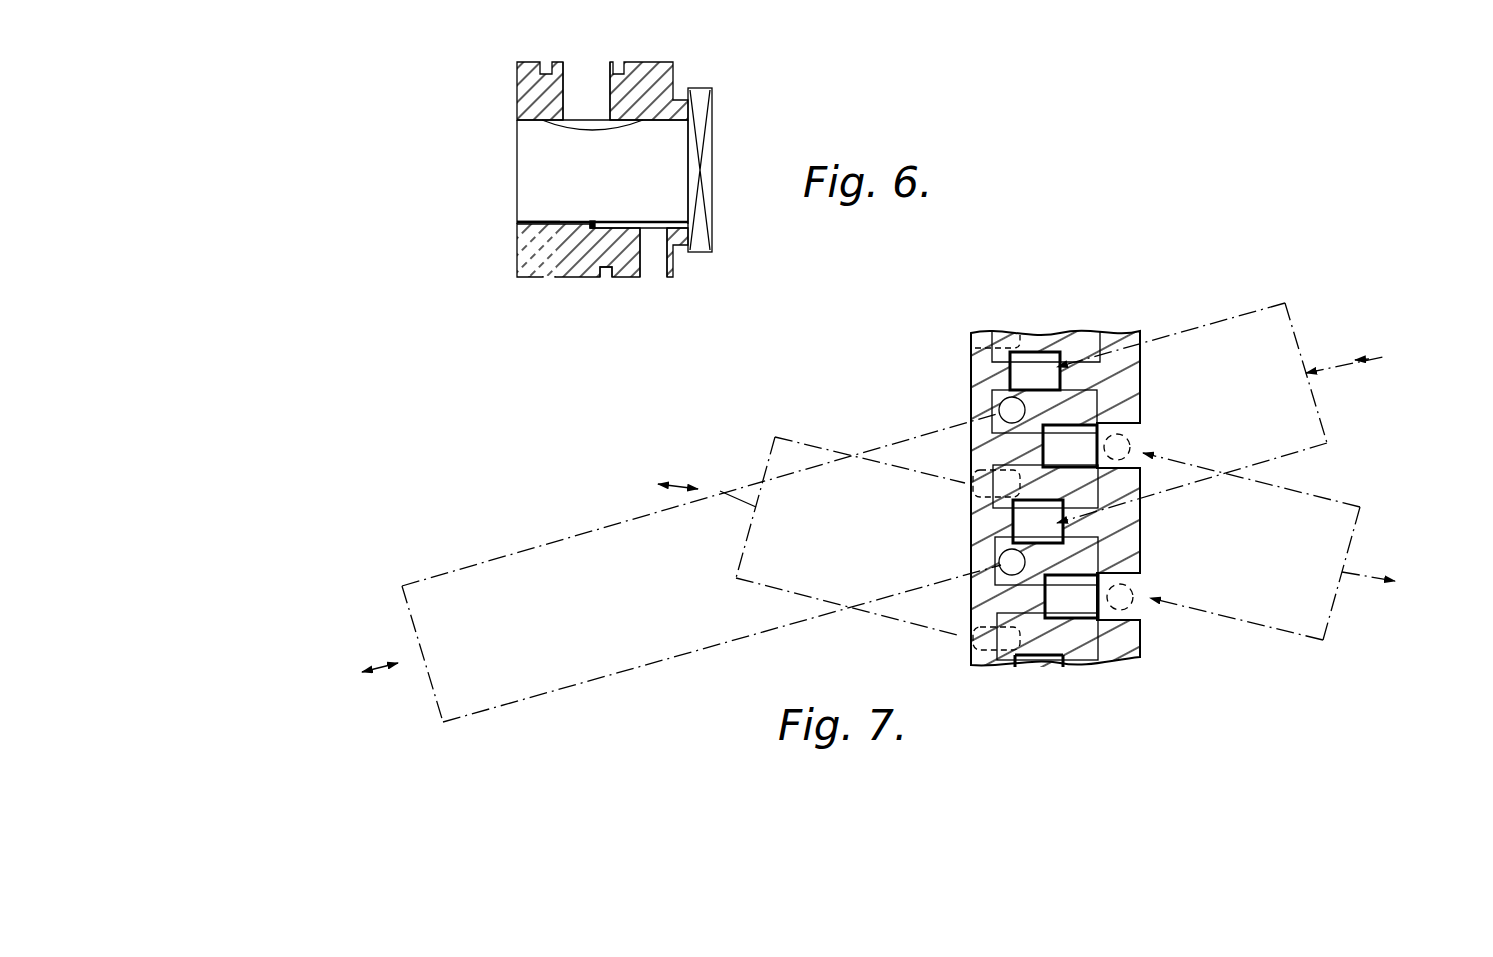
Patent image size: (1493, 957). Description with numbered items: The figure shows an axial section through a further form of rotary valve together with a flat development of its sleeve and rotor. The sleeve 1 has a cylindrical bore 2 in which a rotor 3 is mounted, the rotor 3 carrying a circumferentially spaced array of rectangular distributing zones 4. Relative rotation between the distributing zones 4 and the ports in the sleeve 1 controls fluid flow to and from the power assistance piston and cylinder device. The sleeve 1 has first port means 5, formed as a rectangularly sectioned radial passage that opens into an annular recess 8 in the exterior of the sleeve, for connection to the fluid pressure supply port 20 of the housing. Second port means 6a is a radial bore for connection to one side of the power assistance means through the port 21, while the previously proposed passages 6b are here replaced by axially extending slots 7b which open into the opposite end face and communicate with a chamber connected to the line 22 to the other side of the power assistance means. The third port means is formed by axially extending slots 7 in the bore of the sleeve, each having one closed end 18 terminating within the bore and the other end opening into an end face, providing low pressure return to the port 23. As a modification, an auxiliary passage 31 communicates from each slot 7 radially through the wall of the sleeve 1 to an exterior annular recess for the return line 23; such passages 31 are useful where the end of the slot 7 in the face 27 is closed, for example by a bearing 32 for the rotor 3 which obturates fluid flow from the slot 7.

In FIG. 6, the sleeve 1 is at (528, 93).
In FIG. 6, the cylindrical bore 2 is at (578, 220).
In FIG. 6, the rotor 3 is at (525, 148).
In FIG. 6, the distributing zones 4 is at (593, 127).
In FIG. 7, the distributing zones 4 is at (1068, 423).
In FIG. 6, the first port means 5 is at (610, 83).
In FIG. 7, the first port means 5 is at (1042, 353).
In FIG. 7, the second port means 6a is at (1010, 408).
In FIG. 6, the second port means 6b is at (517, 258).
In FIG. 6, the axially extending slots 7 is at (625, 227).
In FIG. 7, the axially extending slots 7 is at (1133, 460).
In FIG. 6, the axially extending slots 7b is at (517, 217).
In FIG. 7, the axially extending slots 7b is at (976, 325).
In FIG. 6, the annular recess 8 is at (590, 273).
In FIG. 6, the closed end of slot 18 is at (602, 222).
In FIG. 7, the fluid pressure supply port 20 is at (1328, 360).
In FIG. 7, the port 21 is at (424, 657).
In FIG. 7, the port 22 is at (702, 490).
In FIG. 7, the port 23 is at (1368, 584).
In FIG. 6, the face 27 is at (692, 98).
In FIG. 6, the auxiliary passage 31 is at (652, 268).
In FIG. 7, the auxiliary passage 31 is at (1134, 439).
In FIG. 6, the bearing 32 is at (710, 160).